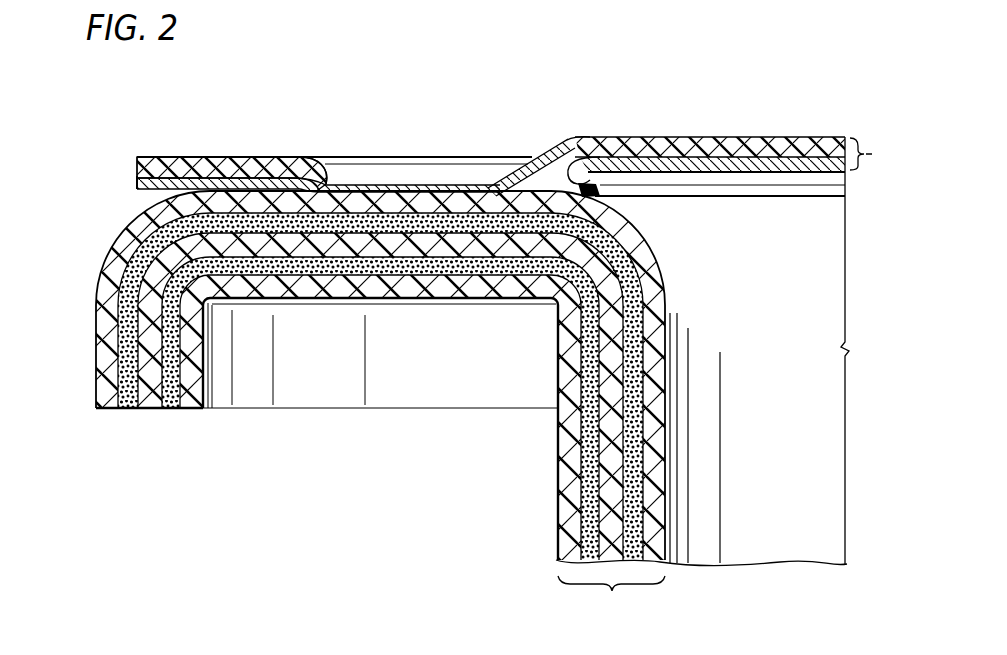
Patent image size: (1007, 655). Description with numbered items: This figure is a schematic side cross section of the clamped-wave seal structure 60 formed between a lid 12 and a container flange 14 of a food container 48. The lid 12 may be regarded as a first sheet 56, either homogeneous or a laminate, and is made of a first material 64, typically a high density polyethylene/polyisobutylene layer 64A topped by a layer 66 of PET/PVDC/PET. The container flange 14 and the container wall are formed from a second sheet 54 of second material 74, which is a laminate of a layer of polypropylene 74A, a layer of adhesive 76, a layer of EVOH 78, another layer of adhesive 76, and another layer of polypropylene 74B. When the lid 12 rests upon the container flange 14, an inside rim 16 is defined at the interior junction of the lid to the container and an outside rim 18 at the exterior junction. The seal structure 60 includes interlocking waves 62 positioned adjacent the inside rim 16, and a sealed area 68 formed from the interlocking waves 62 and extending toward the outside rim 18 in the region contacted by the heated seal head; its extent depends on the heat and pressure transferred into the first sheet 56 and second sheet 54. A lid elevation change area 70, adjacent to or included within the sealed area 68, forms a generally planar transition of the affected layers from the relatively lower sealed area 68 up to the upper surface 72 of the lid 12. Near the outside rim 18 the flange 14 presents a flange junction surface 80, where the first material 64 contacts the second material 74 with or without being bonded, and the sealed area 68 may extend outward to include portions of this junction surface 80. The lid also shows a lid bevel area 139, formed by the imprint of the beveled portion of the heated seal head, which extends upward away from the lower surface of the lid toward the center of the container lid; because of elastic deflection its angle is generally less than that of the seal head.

The lid 12 is at (748, 133).
The container flange 14 is at (538, 310).
The inside rim 16 is at (593, 194).
The outside rim 18 is at (168, 194).
The food container 48 is at (552, 505).
The second sheet 54 is at (611, 593).
The first sheet 56 is at (873, 153).
The clamped-wave seal structure 60 is at (582, 55).
The interlocking waves 62 is at (612, 139).
The first material 64 is at (773, 173).
The polyethylene layer 64A is at (137, 184).
The PET/PVDC/PET layer 66 is at (137, 158).
The sealed area 68 is at (476, 188).
The lid elevation change area 70 is at (322, 157).
The upper surface 72 is at (268, 156).
The second material 74 is at (110, 283).
The polypropylene layer 74A is at (100, 410).
The polypropylene layer 74B is at (196, 410).
The adhesive layer 76 is at (128, 410).
The EVOH layer 78 is at (154, 410).
The flange junction surface 80 is at (215, 176).
The lid bevel area 139 is at (493, 184).